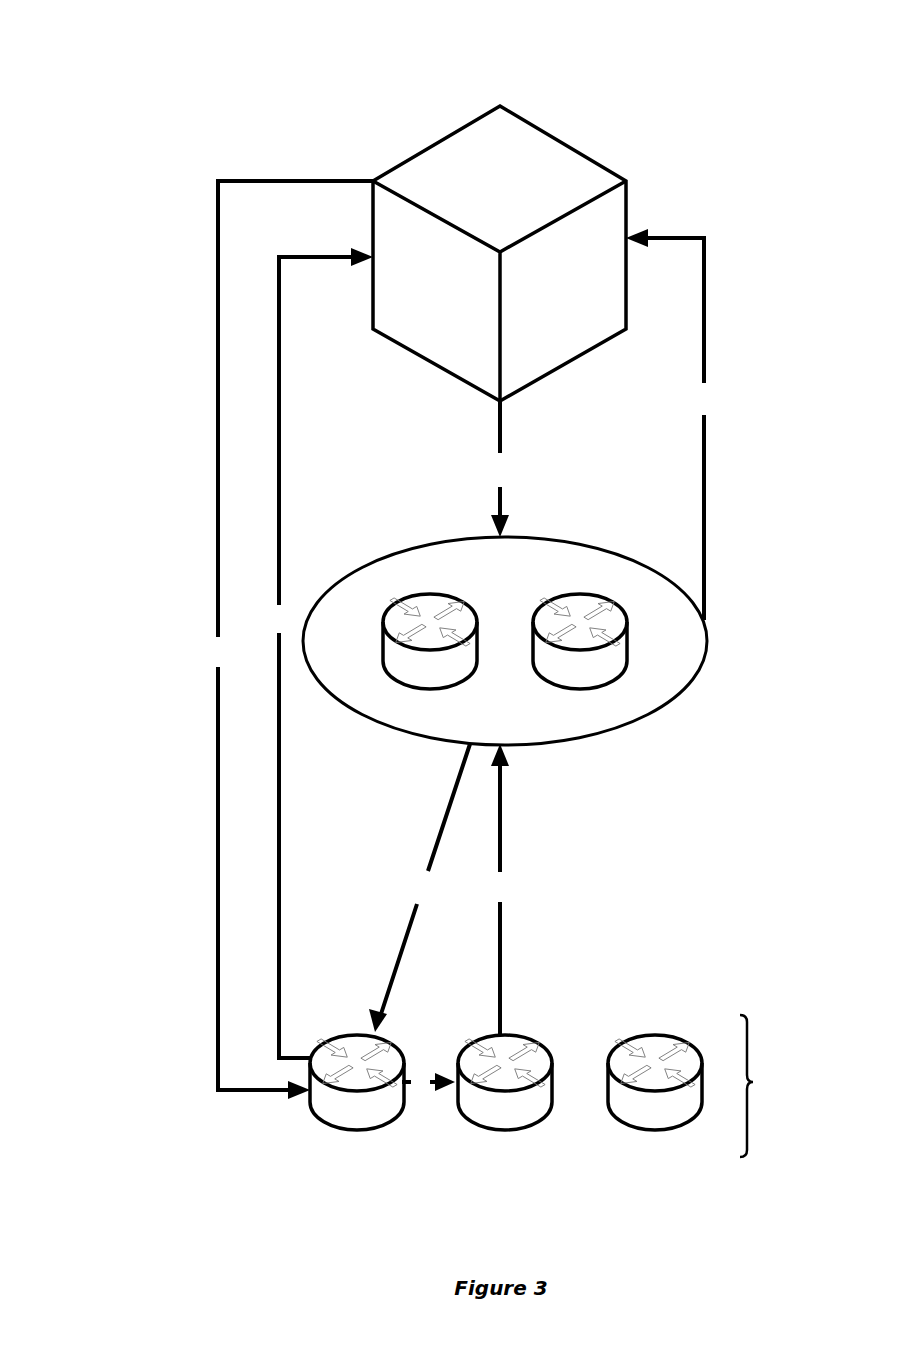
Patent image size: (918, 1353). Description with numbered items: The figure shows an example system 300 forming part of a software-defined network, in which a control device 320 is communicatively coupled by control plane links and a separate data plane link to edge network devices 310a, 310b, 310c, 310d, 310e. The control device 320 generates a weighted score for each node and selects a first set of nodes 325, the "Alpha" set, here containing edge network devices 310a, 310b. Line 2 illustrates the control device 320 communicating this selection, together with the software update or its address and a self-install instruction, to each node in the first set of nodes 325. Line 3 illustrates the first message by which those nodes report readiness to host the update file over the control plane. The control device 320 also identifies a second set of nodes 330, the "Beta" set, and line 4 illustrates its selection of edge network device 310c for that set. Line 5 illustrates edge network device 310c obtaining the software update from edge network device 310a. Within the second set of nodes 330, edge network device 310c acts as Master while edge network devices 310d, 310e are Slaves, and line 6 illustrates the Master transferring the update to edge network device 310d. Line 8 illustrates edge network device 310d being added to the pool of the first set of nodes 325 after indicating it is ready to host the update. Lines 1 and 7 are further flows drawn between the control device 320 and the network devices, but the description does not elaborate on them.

The system 300 is at (99, 39).
The control device 320 is at (405, 352).
The first set of nodes 325 is at (560, 540).
The edge network device 310a is at (418, 593).
The edge network device 310b is at (590, 593).
The edge network device 310c is at (358, 1130).
The edge network device 310d is at (515, 1130).
The edge network device 310e is at (665, 1130).
The second set of nodes 330 is at (551, 1094).
The step 1 is at (590, 129).
The line 2 is at (500, 469).
The line 3 is at (668, 424).
The line 4 is at (292, 640).
The line 5 is at (419, 888).
The line 6 is at (428, 1083).
The step 7 message from device 310c to controller 7 is at (323, 653).
The line 8 is at (500, 889).